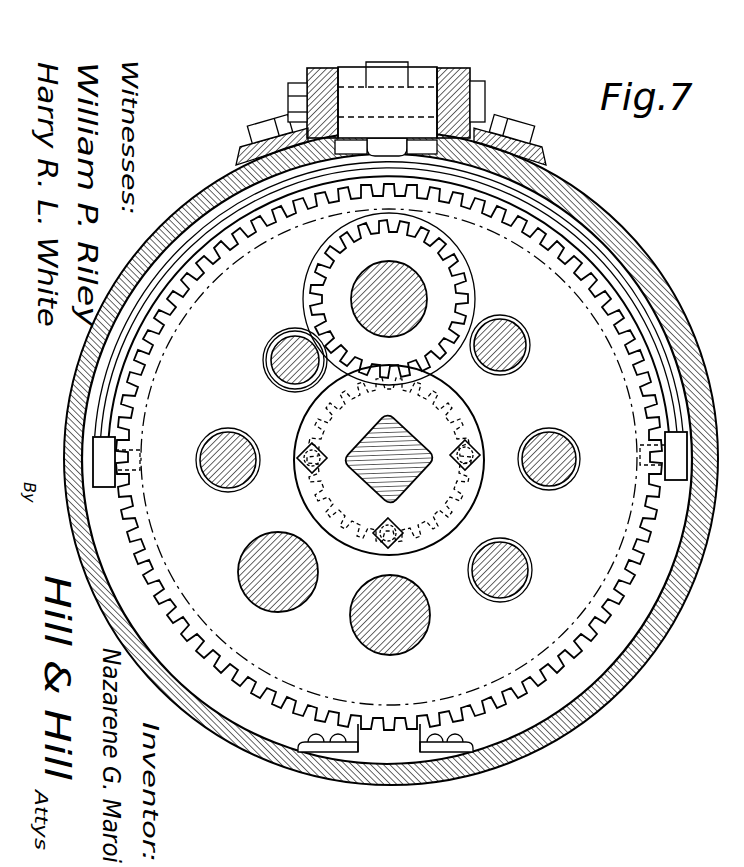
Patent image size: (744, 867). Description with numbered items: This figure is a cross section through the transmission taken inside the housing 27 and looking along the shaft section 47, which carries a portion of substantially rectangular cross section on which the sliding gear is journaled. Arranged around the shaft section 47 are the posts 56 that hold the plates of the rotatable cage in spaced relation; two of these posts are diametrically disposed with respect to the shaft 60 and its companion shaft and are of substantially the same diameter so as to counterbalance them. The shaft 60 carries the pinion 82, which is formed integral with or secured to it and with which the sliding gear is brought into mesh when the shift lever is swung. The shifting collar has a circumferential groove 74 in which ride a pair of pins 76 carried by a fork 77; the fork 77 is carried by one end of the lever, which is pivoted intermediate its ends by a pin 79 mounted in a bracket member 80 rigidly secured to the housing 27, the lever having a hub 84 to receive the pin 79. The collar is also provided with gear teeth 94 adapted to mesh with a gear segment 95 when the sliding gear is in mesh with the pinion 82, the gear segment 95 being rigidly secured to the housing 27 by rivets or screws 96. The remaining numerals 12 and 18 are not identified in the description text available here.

The ring gear teeth 12 is at (197, 592).
The bearing block 18 is at (385, 72).
The housing 27 is at (587, 207).
The shaft section 47 is at (381, 472).
The posts 56 is at (408, 592).
The shaft 60 is at (390, 262).
The circumferential groove 74 is at (163, 562).
The pins 76 is at (120, 458).
The fork 77 is at (523, 199).
The pin 79 is at (308, 74).
The bracket member 80 is at (486, 91).
The pinion 82 is at (458, 280).
The hub 84 is at (455, 82).
The gear teeth 94 is at (282, 708).
The gear segment 95 is at (381, 722).
The rivets or screws 96 is at (438, 757).